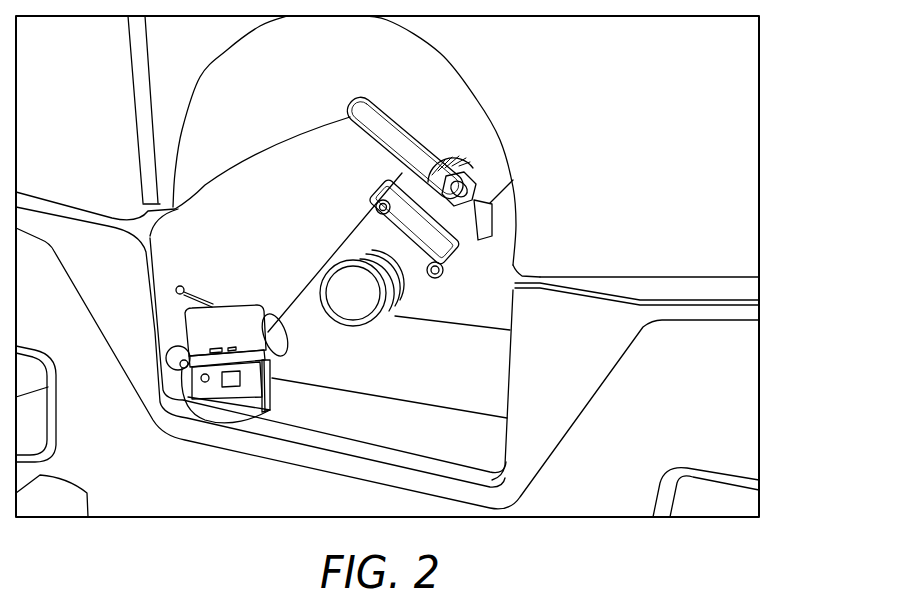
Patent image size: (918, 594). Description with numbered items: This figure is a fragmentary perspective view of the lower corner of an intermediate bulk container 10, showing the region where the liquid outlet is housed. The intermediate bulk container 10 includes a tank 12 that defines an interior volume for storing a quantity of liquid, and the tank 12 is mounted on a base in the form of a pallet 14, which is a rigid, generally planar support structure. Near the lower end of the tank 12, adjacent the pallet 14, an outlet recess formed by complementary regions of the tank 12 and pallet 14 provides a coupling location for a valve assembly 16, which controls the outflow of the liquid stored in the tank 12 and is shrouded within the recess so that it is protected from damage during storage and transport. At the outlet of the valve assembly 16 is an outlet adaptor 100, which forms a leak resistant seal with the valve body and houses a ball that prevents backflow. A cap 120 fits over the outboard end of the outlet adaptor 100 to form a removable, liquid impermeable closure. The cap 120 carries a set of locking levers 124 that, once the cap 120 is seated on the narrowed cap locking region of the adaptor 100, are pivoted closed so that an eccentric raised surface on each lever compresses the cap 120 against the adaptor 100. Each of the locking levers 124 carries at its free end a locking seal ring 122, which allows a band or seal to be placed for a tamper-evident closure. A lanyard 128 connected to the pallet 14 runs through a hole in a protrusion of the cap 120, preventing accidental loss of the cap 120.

The intermediate bulk container 10 is at (780, 163).
The tank 12 is at (742, 77).
The pallet 14 is at (740, 428).
The valve assembly 16 is at (496, 256).
The outlet adaptor 100 is at (338, 256).
The cap 120 is at (176, 350).
The locking seal ring 122 is at (268, 302).
The locking levers 124 is at (272, 417).
The lanyard 128 is at (230, 423).